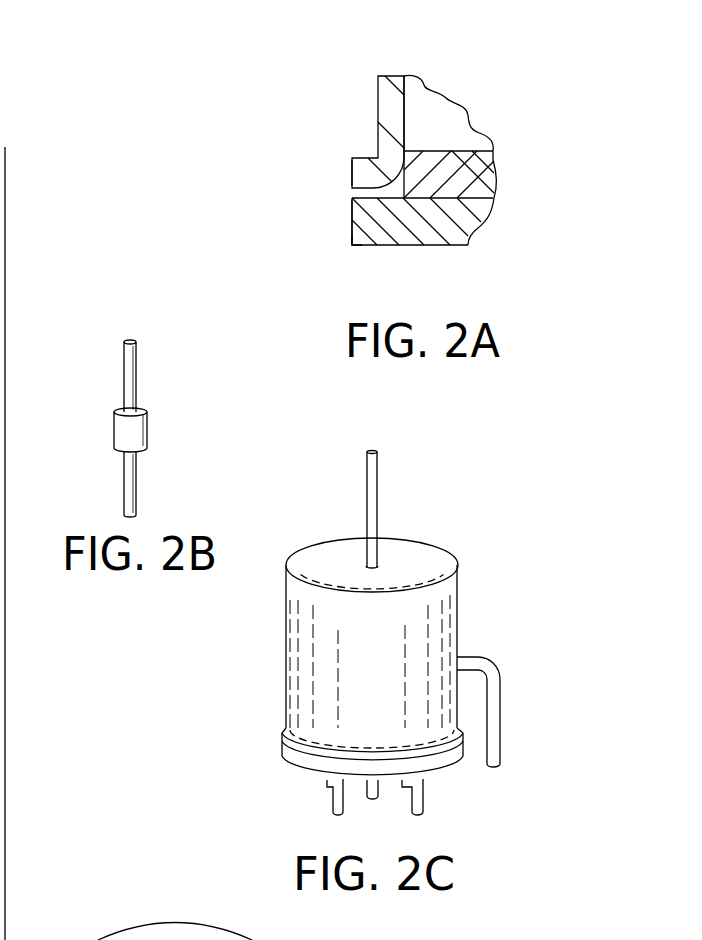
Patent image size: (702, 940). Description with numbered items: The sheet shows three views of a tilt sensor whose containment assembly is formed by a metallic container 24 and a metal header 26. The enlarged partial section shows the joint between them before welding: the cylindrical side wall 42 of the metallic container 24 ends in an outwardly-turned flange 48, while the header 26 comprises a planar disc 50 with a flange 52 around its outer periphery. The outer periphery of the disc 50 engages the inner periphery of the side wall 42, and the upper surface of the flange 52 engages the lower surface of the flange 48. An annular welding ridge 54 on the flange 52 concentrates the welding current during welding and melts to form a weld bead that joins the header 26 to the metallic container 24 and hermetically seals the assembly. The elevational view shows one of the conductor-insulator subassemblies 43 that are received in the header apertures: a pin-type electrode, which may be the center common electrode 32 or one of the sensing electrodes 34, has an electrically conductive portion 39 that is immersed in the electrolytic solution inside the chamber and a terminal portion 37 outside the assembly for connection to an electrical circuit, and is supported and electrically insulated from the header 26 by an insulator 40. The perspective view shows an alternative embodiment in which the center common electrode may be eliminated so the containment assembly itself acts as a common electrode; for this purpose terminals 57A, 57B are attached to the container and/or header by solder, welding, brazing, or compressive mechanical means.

In FIG. 2A, the metallic container 24 is at (390, 110).
In FIG. 2A, the metal header 26 is at (417, 222).
In FIG. 2A, the side wall 42 is at (406, 103).
In FIG. 2A, the flange 48 is at (360, 172).
In FIG. 2A, the planar disc 50 is at (355, 248).
In FIG. 2A, the flange 52 is at (351, 218).
In FIG. 2A, the annular welding ridge 54 is at (370, 190).
In FIG. 2B, the center common electrode 32 is at (154, 376).
In FIG. 2B, the sensing electrode 34 is at (154, 376).
In FIG. 2B, the terminal portion 37 is at (130, 490).
In FIG. 2B, the electrically conductive portion 39 is at (127, 373).
In FIG. 2B, the insulator 40 is at (128, 432).
In FIG. 2B, the conductor-insulator subassembly 43 is at (139, 428).
In FIG. 2C, the terminal 57A is at (376, 487).
In FIG. 2C, the terminal 57B is at (488, 768).